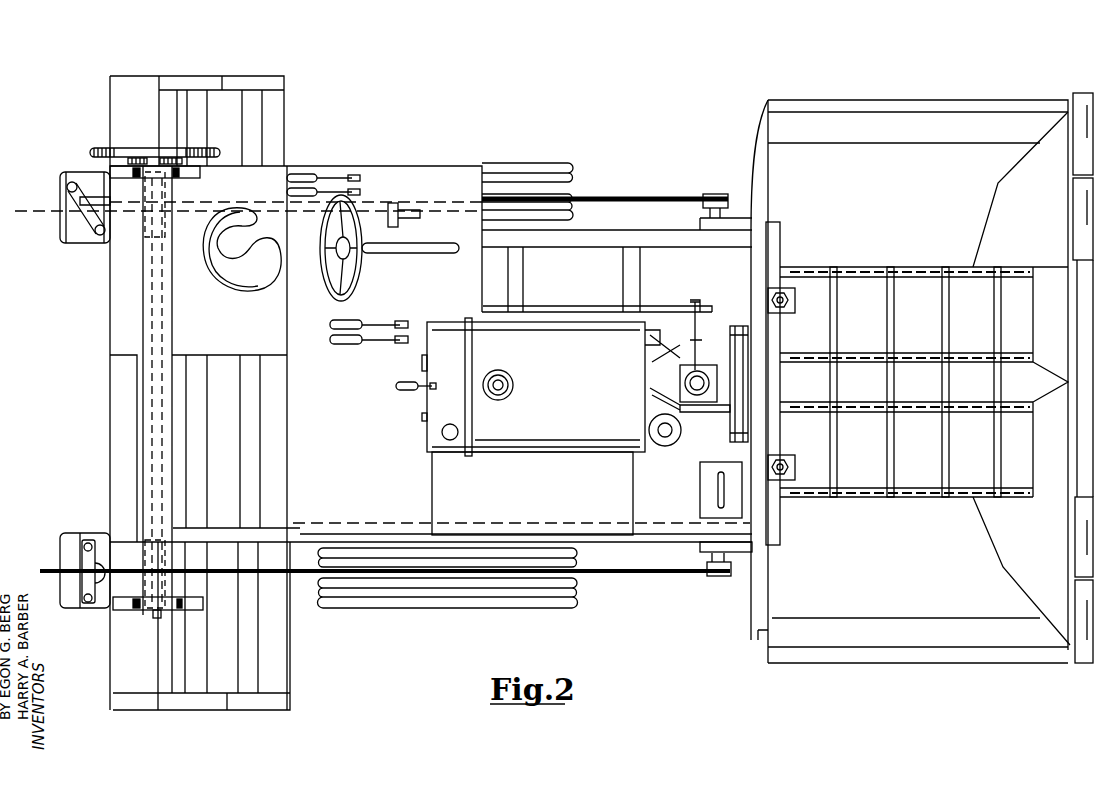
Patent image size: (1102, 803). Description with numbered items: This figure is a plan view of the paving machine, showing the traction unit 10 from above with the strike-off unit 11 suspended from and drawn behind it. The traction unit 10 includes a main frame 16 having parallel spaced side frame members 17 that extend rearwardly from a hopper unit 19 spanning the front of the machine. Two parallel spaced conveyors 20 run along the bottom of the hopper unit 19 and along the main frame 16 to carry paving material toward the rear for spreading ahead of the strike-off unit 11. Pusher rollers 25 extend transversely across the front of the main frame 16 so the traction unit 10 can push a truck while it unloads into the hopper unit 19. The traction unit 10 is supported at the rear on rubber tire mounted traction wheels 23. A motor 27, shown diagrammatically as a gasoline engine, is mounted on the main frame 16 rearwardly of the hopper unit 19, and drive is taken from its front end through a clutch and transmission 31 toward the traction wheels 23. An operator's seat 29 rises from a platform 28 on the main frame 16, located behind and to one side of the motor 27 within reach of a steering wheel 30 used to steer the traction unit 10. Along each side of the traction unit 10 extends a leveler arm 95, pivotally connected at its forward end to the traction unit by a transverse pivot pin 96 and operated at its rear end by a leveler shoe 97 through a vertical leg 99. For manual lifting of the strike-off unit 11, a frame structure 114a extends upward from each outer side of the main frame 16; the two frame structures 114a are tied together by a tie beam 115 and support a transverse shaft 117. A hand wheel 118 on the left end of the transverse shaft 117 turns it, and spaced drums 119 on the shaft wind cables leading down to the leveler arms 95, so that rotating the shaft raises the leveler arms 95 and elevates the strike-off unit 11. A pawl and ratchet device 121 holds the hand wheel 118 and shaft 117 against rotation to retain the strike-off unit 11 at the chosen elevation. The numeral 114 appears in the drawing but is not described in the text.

The traction unit 10 is at (440, 165).
The strike-off unit 11 is at (106, 127).
The main frame 16 is at (674, 233).
The side frame members 17 is at (219, 530).
The hopper unit 19 is at (924, 163).
The conveyors 20 is at (942, 298).
The traction wheels 23 is at (573, 180).
The pusher rollers 25 is at (1080, 198).
The motor 27 is at (566, 330).
The platform 28 is at (378, 178).
The operator's seat 29 is at (243, 290).
The steering wheel 30 is at (361, 283).
The clutch and transmission 31 is at (680, 422).
The leveler arm 95 is at (672, 196).
The transverse pivot pin 96 is at (716, 198).
The leveler shoe 97 is at (78, 236).
The vertical leg 99 is at (72, 218).
The link 114 is at (70, 191).
The frame structure 114a is at (180, 176).
The tie beam 115 is at (141, 313).
The transverse shaft 117 is at (161, 613).
The hand wheel 118 is at (92, 151).
The drum 119 is at (165, 225).
The pawl and ratchet device 121 is at (126, 160).